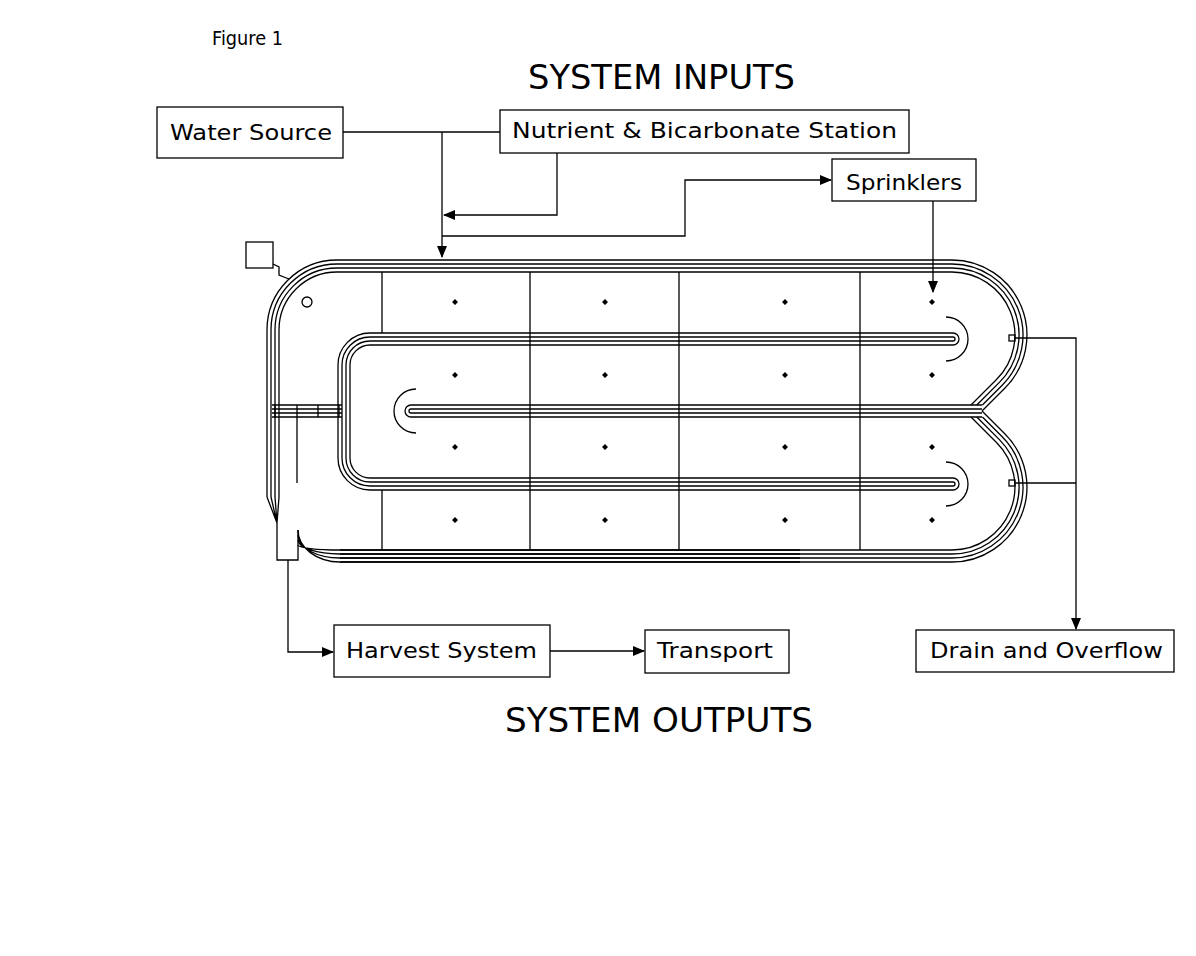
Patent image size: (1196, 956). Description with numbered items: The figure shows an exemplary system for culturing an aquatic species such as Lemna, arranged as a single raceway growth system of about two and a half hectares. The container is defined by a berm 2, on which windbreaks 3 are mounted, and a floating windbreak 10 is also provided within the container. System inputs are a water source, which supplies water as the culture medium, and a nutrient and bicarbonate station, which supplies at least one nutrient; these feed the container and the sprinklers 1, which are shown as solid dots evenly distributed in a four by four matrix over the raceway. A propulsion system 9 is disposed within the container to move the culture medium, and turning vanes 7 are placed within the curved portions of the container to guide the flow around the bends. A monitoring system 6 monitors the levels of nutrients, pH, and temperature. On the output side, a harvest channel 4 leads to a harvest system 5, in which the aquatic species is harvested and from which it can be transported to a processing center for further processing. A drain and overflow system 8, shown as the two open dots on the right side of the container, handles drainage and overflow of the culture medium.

The sprinklers 1 is at (935, 299).
The berm 2 is at (1022, 432).
The windbreaks 3 is at (751, 563).
The harvest channel 4 is at (284, 465).
The harvest system 5 is at (277, 563).
The monitoring system 6 is at (278, 252).
The turning vanes 7 is at (972, 492).
The drain and overflow system 8 is at (1018, 337).
The propulsion system 9 is at (272, 403).
The floating windbreak 10 is at (862, 524).